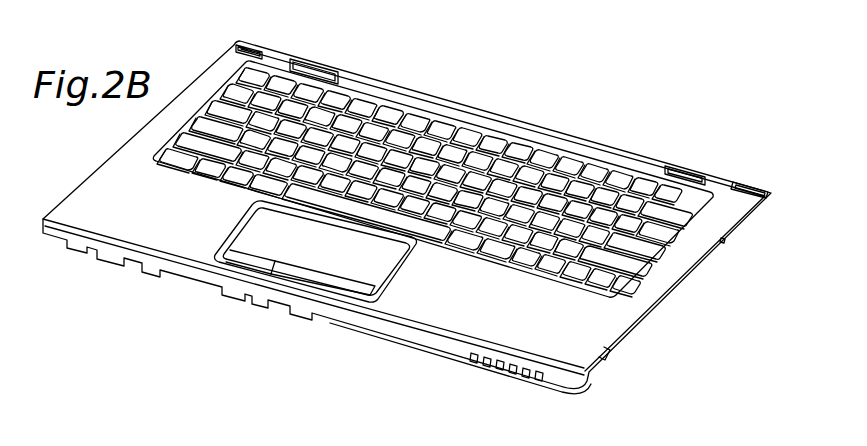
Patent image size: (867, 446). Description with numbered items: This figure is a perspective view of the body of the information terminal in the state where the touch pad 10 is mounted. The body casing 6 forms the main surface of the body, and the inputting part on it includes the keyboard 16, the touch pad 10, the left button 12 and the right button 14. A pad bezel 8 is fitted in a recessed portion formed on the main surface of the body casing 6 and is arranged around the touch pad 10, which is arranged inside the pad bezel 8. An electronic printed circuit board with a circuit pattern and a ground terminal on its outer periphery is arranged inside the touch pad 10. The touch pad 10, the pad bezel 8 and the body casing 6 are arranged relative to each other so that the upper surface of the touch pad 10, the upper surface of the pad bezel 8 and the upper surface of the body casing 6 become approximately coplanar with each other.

The body casing 6 is at (718, 220).
The pad bezel 8 is at (397, 272).
The touch pad 10 is at (245, 247).
The left button 12 is at (272, 268).
The right button 14 is at (322, 284).
The keyboard 16 is at (653, 238).